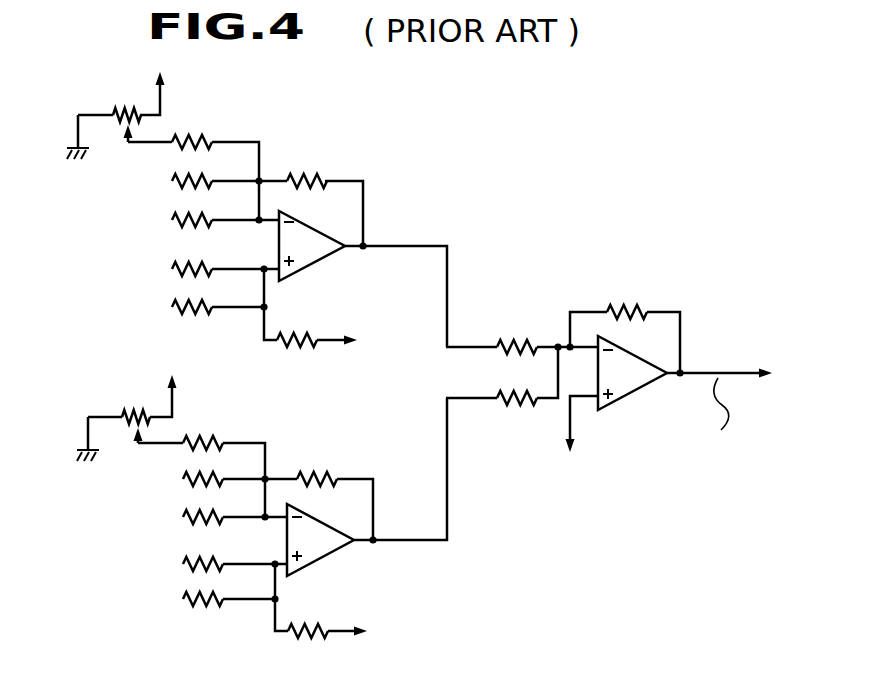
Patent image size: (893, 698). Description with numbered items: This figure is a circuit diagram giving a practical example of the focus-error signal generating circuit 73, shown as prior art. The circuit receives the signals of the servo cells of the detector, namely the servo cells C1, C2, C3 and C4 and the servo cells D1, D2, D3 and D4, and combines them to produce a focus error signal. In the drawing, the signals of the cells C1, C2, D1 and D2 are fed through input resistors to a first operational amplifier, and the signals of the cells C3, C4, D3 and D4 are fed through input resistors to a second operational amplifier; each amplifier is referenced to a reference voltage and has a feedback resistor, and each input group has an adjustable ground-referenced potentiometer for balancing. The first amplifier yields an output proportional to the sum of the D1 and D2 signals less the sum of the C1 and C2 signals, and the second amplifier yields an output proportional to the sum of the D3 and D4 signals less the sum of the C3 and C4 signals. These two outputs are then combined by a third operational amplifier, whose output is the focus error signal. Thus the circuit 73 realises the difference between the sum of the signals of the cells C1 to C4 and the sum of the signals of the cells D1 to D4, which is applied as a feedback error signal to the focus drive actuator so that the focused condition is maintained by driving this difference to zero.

The focus-error signal generating circuit 73 is at (481, 166).
The servo cell C1 is at (172, 181).
The servo cell C2 is at (172, 220).
The servo cell C3 is at (183, 479).
The servo cell C4 is at (183, 517).
The servo cell D1 is at (172, 269).
The servo cell D2 is at (172, 307).
The servo cell D3 is at (183, 564).
The servo cell D4 is at (183, 599).